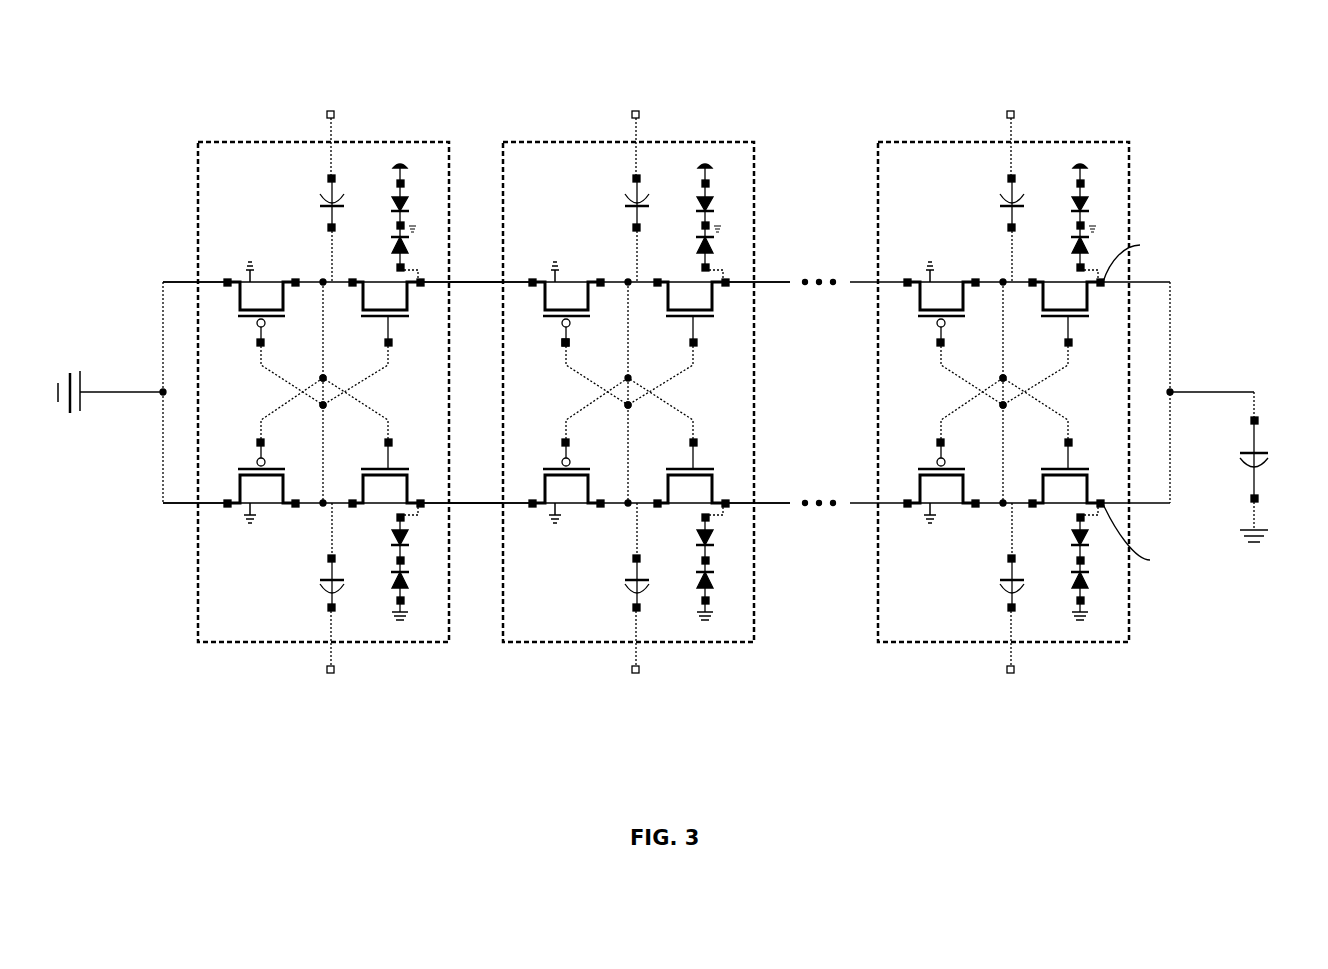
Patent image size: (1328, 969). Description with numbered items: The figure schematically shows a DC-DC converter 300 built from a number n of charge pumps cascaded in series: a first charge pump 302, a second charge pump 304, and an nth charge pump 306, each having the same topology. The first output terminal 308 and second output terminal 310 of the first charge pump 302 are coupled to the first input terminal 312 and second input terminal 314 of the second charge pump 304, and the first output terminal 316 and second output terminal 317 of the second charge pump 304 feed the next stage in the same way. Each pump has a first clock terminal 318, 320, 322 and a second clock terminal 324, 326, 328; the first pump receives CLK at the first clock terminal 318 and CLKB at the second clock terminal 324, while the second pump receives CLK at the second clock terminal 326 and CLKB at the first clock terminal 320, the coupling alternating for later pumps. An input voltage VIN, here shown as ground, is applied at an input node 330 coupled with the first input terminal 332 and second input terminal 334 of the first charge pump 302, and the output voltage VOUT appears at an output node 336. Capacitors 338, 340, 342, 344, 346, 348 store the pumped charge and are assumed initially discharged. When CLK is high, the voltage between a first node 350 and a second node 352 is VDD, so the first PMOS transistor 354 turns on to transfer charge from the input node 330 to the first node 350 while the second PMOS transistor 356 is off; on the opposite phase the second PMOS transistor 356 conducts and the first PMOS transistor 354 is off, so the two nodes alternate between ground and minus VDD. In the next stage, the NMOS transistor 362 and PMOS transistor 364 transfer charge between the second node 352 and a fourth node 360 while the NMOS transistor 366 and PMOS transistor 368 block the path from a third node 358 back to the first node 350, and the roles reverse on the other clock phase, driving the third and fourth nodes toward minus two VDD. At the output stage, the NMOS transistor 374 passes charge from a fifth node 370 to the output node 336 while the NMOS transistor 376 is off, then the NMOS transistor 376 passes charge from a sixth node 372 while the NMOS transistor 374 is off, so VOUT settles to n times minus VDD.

The DC-DC converter 300 is at (118, 180).
The first charge pump 302 is at (222, 205).
The second charge pump 304 is at (525, 197).
The nth charge pump 306 is at (898, 193).
The first output terminal 308 is at (445, 282).
The second output terminal 310 is at (440, 505).
The first input terminal 312 is at (520, 283).
The second input terminal 314 is at (522, 503).
The first output terminal 316 is at (732, 285).
The second output terminal 317 is at (732, 501).
The first clock terminal 318 is at (328, 114).
The first clock terminal 320 is at (640, 114).
The first clock terminal 322 is at (1015, 114).
The second clock terminal 324 is at (336, 670).
The second clock terminal 326 is at (633, 670).
The second clock terminal 328 is at (1008, 670).
The input node 330 is at (163, 398).
The first input terminal 332 is at (205, 282).
The second input terminal 334 is at (218, 505).
The output node 336 is at (1173, 394).
The capacitor 338 is at (332, 200).
The capacitor 340 is at (330, 605).
The capacitor 342 is at (640, 205).
The capacitor 344 is at (638, 608).
The capacitor 346 is at (1015, 207).
The capacitor 348 is at (1014, 608).
The first node 350 is at (322, 378).
The second node 352 is at (324, 406).
The MP0 354 is at (256, 282).
The MP1 356 is at (250, 522).
The third node 358 is at (626, 378).
The fourth node 360 is at (630, 406).
The MN1 362 is at (388, 472).
The MP3 364 is at (560, 468).
The MN0 366 is at (392, 318).
The MP2 368 is at (578, 312).
The fifth node 370 is at (1001, 378).
The sixth node 372 is at (1005, 406).
The MN4 374 is at (1072, 318).
The MN5 376 is at (1068, 472).